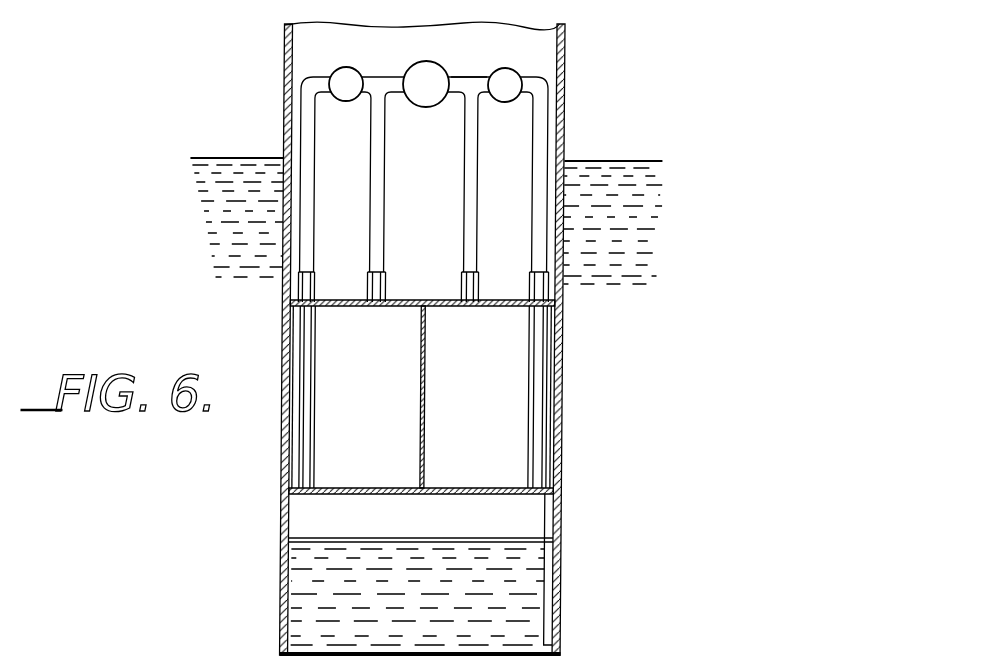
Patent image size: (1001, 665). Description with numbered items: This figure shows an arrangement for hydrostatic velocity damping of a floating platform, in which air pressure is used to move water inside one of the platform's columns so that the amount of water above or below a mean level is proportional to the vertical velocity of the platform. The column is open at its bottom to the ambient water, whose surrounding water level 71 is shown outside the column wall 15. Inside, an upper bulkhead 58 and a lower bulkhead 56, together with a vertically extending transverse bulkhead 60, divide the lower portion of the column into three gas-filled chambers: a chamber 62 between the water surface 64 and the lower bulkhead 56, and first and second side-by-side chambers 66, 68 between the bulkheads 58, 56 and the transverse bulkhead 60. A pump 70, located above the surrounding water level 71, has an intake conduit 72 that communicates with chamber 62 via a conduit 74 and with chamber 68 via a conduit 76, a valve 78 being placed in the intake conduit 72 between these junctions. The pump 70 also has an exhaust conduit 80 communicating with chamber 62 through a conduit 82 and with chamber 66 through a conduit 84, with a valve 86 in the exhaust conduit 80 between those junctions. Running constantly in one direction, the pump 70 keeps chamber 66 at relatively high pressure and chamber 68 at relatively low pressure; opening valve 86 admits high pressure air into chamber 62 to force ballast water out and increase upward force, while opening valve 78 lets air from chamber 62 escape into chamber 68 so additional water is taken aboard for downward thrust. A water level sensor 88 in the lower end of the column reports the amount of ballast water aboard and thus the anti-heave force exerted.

The housing 15 is at (562, 302).
The lower bulkhead 56 is at (440, 497).
The upper bulkhead 58 is at (406, 300).
The transverse bulkhead 60 is at (424, 352).
The chamber 62 is at (426, 527).
The water surface 64 is at (480, 538).
The first chamber 66 is at (378, 415).
The second chamber 68 is at (486, 418).
The pump 70 is at (423, 61).
The water level 71 is at (630, 161).
The intake conduit 72 is at (459, 77).
The conduit 74 is at (530, 165).
The conduit 76 is at (475, 217).
The valve 78 is at (506, 69).
The exhaust conduit 80 is at (326, 76).
The conduit 82 is at (313, 220).
The conduit 84 is at (384, 172).
The valve 86 is at (341, 67).
The water level sensor 88 is at (554, 548).